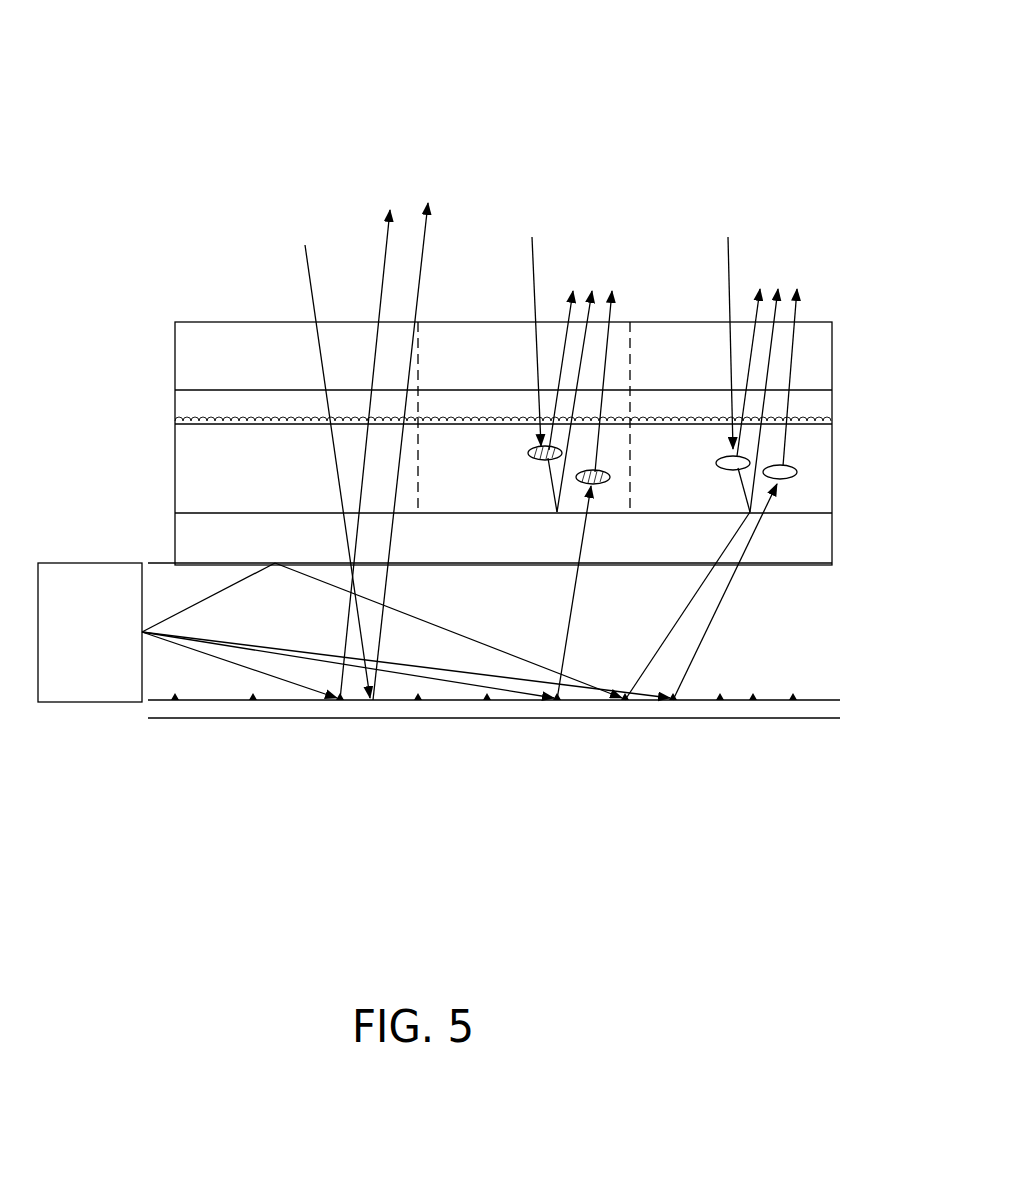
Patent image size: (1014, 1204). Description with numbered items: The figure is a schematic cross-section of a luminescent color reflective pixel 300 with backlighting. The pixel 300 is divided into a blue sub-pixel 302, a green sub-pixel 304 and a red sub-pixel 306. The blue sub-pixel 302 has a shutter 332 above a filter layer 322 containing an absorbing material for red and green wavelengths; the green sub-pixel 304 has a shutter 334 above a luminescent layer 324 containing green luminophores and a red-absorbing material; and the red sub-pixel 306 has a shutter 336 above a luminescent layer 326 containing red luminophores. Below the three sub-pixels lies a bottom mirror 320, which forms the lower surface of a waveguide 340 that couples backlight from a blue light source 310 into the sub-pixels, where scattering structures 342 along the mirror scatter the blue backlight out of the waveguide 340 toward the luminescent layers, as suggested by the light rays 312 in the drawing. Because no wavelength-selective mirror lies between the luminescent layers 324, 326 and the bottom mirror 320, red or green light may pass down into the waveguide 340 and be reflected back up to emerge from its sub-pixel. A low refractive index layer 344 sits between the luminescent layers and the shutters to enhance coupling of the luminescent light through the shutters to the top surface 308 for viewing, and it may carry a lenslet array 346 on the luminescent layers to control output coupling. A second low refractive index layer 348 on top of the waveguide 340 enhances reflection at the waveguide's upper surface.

The luminescent color reflective pixel 300 is at (306, 112).
The blue sub-pixel 302 is at (252, 322).
The green sub-pixel 304 is at (519, 322).
The red sub-pixel 306 is at (677, 322).
The top surface 308 is at (236, 322).
The blue light source 310 is at (112, 562).
The blue light rays 312 is at (173, 647).
The bottom mirror 320 is at (293, 703).
The filter layer 322 is at (245, 473).
The luminescent layer 324 is at (517, 474).
The luminescent layer 326 is at (721, 473).
The shutter 332 is at (216, 362).
The shutter 334 is at (456, 354).
The shutter 336 is at (679, 354).
The waveguide 340 is at (727, 650).
The scattering structures 342 is at (800, 697).
The low refractive index layer 344 is at (343, 404).
The lenslet array 346 is at (815, 420).
The low refractive index layer 348 is at (489, 540).